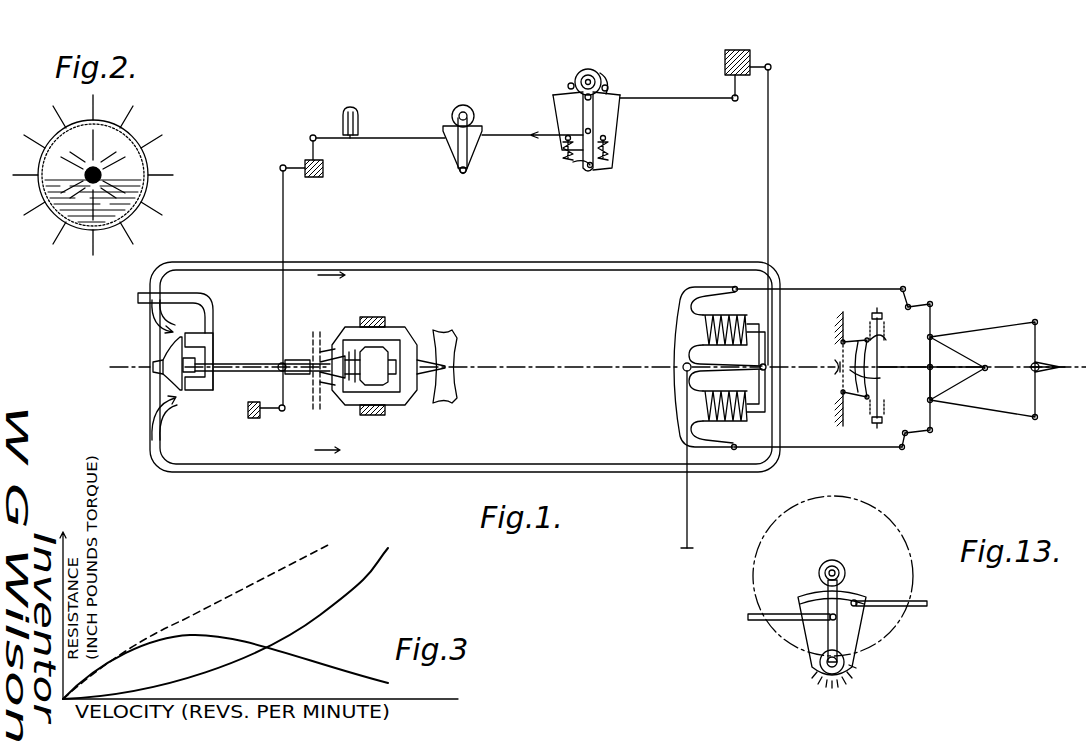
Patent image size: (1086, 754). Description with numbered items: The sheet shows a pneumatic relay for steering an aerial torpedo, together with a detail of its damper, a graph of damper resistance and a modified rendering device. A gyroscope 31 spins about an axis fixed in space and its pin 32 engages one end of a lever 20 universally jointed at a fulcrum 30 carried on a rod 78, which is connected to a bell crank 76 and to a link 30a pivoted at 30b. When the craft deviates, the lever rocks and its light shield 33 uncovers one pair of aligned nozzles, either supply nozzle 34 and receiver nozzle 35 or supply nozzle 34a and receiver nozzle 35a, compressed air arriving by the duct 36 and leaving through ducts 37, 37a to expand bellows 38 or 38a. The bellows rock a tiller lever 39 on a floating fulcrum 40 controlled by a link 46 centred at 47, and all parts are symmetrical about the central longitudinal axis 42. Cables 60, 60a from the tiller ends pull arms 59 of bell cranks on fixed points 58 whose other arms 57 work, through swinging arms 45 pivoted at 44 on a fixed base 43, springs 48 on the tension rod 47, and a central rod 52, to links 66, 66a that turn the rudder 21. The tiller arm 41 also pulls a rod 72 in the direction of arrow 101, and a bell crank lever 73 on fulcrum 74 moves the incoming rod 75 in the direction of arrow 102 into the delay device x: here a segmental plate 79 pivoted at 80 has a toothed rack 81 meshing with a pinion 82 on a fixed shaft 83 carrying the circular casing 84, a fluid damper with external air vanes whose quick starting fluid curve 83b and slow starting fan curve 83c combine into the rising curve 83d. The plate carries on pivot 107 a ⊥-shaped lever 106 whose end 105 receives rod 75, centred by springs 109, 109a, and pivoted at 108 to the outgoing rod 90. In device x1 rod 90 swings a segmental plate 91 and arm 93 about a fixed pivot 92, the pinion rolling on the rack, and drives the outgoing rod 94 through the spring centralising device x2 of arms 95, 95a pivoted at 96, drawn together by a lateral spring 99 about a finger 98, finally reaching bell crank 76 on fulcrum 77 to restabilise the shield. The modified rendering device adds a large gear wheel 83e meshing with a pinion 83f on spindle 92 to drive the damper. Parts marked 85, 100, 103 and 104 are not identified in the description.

In FIG. 1, the lever 20 is at (245, 364).
In FIG. 1, the rudder 21 is at (1045, 363).
In FIG. 1, the universal joint 30 is at (280, 370).
In FIG. 1, the link 30a is at (285, 410).
In FIG. 1, the pivot 30b is at (248, 416).
In FIG. 1, the gyroscope 31 is at (405, 330).
In FIG. 1, the pin 32 is at (335, 340).
In FIG. 1, the shield 33 is at (170, 355).
In FIG. 1, the supply nozzle 34 is at (205, 345).
In FIG. 1, the supply nozzle 34a is at (192, 386).
In FIG. 1, the receiver nozzle 35 is at (186, 314).
In FIG. 1, the receiver nozzle 35a is at (180, 412).
In FIG. 1, the duct 36 is at (200, 290).
In FIG. 1, the duct 37 is at (232, 262).
In FIG. 1, the duct 37a is at (248, 470).
In FIG. 1, the bellows 38 is at (700, 325).
In FIG. 1, the bellows 38a is at (700, 410).
In FIG. 1, the tiller lever 39 is at (668, 417).
In FIG. 1, the fulcrum 40 is at (683, 370).
In FIG. 1, the arm 41 is at (765, 370).
In FIG. 1, the central longitudinal axis 42 is at (552, 367).
In FIG. 1, the fixed base 43 is at (838, 335).
In FIG. 1, the pivot 44 is at (850, 341).
In FIG. 1, the swinging arms 45 is at (856, 320).
In FIG. 1, the link 46 is at (687, 492).
In FIG. 1, the tension rod 47 is at (892, 400).
In FIG. 1, the springs 48 is at (886, 340).
In FIG. 1, the central rod 52 is at (876, 378).
In FIG. 1, the bell crank arm 57 is at (920, 306).
In FIG. 1, the fixed point 58 is at (906, 383).
In FIG. 1, the bell crank arm 59 is at (898, 300).
In FIG. 1, the cable 60 is at (830, 289).
In FIG. 1, the cable 60a is at (842, 447).
In FIG. 1, the link 66 is at (990, 330).
In FIG. 1, the link 66a is at (1000, 410).
In FIG. 1, the rod 72 is at (768, 196).
In FIG. 1, the bell crank lever 73 is at (771, 64).
In FIG. 1, the fulcrum 74 is at (725, 58).
In FIG. 1, the incoming rod 75 is at (690, 98).
In FIG. 1, the bell crank 76 is at (285, 162).
In FIG. 1, the fulcrum 77 is at (323, 172).
In FIG. 1, the rod 78 is at (283, 290).
In FIG. 1, the segmental plate 79 is at (560, 128).
In FIG. 1, the pivot 80 is at (588, 168).
In FIG. 1, the toothed rack 81 is at (560, 92).
In FIG. 1, the pinion 82 is at (590, 69).
In FIG. 13, the pinion 82 is at (832, 560).
In FIG. 2, the fixed shaft 83 is at (100, 168).
In FIG. 13, the fixed shaft 83 is at (835, 572).
In FIG. 3, the fluid damper curve 83b is at (245, 636).
In FIG. 3, the air beater fan curve 83c is at (360, 580).
In FIG. 3, the combined curve 83d is at (225, 597).
In FIG. 13, the large gear wheel 83e is at (760, 543).
In FIG. 13, the pinion 83f is at (850, 670).
In FIG. 2, the circular casing 84 is at (150, 162).
In FIG. 1, the circular casing 84 is at (606, 78).
In FIG. 2, the liquid 85 is at (152, 205).
In FIG. 1, the liquid 85 is at (568, 86).
In FIG. 1, the outgoing rod 90 is at (532, 143).
In FIG. 13, the outgoing rod 90 is at (920, 603).
In FIG. 1, the segmental plate 91 is at (474, 150).
In FIG. 13, the segmental plate 91 is at (856, 640).
In FIG. 1, the fixed pivot 92 is at (465, 172).
In FIG. 13, the fixed pivot 92 is at (828, 674).
In FIG. 1, the arm 93 is at (458, 150).
In FIG. 13, the arm 93 is at (833, 612).
In FIG. 1, the outgoing rod 94 is at (420, 138).
In FIG. 13, the outgoing rod 94 is at (760, 614).
In FIG. 1, the arm 95 is at (343, 122).
In FIG. 1, the arm 95a is at (358, 122).
In FIG. 1, the pivot 96 is at (353, 110).
In FIG. 1, the finger 98 is at (350, 137).
In FIG. 1, the lateral spring 99 is at (346, 112).
In FIG. 1, the direction arrow 100 is at (138, 321).
In FIG. 1, the arrow 101 is at (765, 240).
In FIG. 1, the arrow 102 is at (700, 103).
In FIG. 1, the link 103 is at (380, 124).
In FIG. 1, the direction arrow 104 is at (283, 232).
In FIG. 1, the lever end 105 is at (583, 100).
In FIG. 1, the ⊥-shaped lever 106 is at (593, 112).
In FIG. 1, the pivot 107 is at (600, 164).
In FIG. 1, the pivot 108 is at (593, 131).
In FIG. 1, the spring 109 is at (562, 150).
In FIG. 1, the spring 109a is at (607, 150).
In FIG. 1, the delay action device x is at (610, 57).
In FIG. 1, the rendering device x1 is at (497, 66).
In FIG. 1, the spring centralising device x2 is at (337, 62).